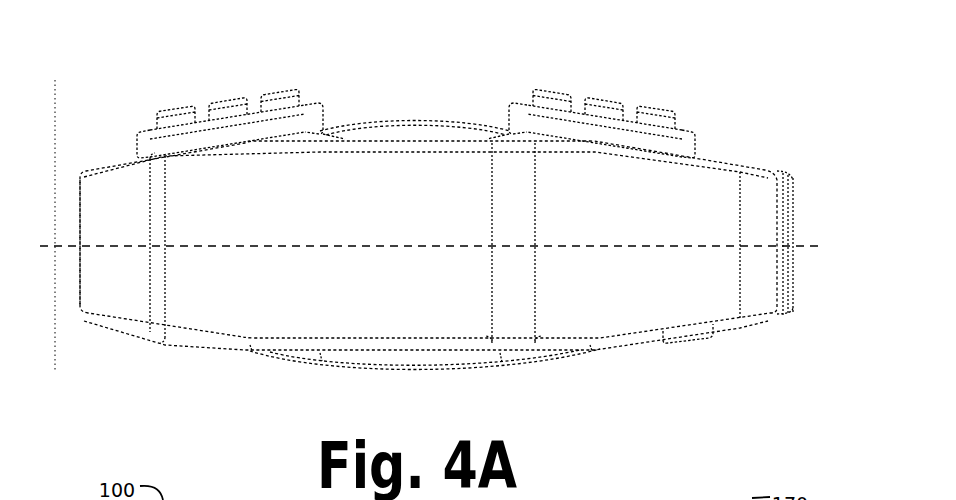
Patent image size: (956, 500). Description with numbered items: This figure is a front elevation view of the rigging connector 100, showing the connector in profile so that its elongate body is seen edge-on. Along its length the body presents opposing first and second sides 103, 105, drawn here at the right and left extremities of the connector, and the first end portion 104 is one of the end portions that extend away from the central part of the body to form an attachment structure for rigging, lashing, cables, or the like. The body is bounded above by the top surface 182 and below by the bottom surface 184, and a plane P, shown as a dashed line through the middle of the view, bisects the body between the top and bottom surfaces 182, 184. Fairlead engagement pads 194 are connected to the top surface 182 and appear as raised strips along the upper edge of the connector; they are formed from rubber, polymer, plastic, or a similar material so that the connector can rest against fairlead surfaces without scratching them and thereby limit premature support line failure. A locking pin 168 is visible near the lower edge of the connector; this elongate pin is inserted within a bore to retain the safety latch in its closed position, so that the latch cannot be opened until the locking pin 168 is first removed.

The rigging connector 100 is at (215, 60).
The first side 103 is at (806, 287).
The first end portion 104 is at (372, 320).
The second side 105 is at (65, 292).
The locking pin 168 is at (685, 342).
The top surface 182 is at (407, 118).
The bottom surface 184 is at (422, 367).
The fairlead engagement pads 194 is at (213, 108).
The plane P is at (66, 244).